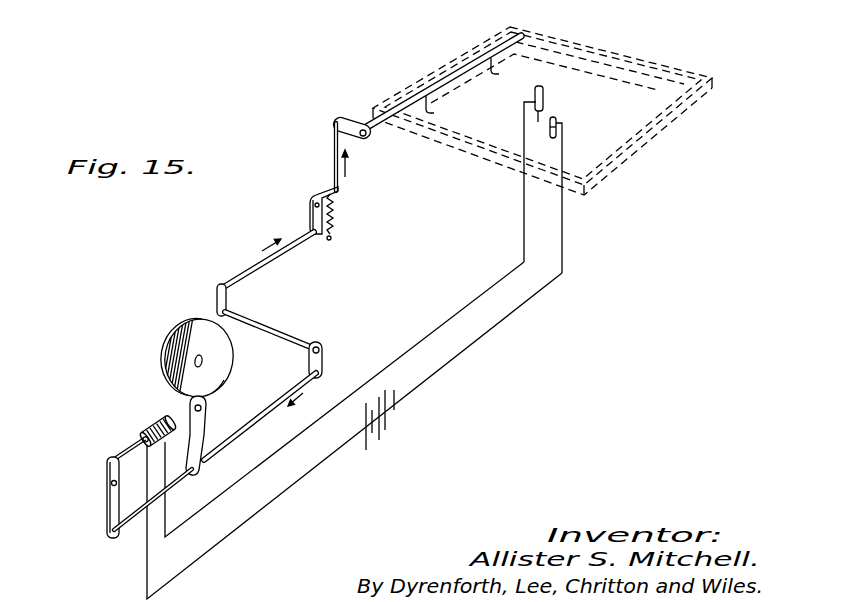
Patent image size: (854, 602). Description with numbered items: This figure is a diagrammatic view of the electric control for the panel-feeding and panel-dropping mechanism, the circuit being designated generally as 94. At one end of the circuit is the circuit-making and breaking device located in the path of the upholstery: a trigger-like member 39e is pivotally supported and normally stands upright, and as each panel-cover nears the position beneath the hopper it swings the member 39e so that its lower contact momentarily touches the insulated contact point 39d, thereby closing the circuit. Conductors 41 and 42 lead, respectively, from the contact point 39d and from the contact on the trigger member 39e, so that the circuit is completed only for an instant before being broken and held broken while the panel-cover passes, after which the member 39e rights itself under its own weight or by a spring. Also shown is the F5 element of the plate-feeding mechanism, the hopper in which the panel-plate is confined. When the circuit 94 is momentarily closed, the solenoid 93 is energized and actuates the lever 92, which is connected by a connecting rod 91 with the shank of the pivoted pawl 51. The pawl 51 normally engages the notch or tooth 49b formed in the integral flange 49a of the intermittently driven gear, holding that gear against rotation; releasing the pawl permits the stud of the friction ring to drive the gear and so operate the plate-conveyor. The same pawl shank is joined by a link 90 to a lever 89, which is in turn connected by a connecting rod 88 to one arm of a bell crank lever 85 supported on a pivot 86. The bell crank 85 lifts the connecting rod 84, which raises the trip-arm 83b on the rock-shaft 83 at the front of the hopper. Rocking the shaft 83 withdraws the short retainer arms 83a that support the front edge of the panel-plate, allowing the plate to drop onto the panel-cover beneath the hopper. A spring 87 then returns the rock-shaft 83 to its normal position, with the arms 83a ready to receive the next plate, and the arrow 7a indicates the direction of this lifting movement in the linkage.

The tray F5 is at (613, 53).
The conductor 42 is at (523, 192).
The conductor 41 is at (563, 214).
The electric circuit 94 is at (471, 342).
The trigger-like member 39e is at (544, 98).
The insulated contact point 39d is at (557, 126).
The rock-shaft 83 is at (452, 80).
The short arms 83a is at (492, 72).
The trip-arm 83b is at (358, 122).
The direction pointer 7a is at (333, 121).
The connecting rod 84 is at (334, 141).
The bell crank lever 85 is at (310, 215).
The pivot 86 is at (314, 200).
The spring 87 is at (335, 223).
The connecting rod 88 is at (225, 282).
The lever 89 is at (226, 300).
The link 90 is at (238, 446).
The integral flange 49a is at (178, 348).
The notch or tooth 49b is at (216, 384).
The pawl 51 is at (206, 408).
The solenoid 93 is at (150, 426).
The lever 92 is at (107, 489).
The connecting rod 91 is at (137, 515).